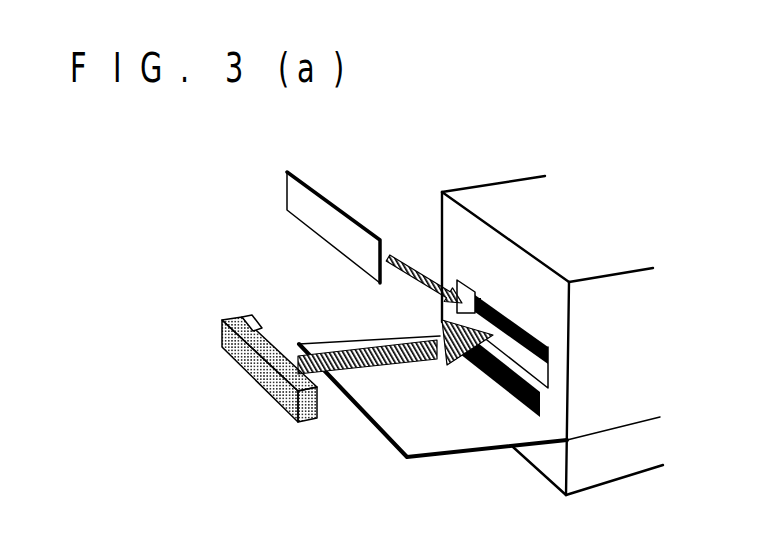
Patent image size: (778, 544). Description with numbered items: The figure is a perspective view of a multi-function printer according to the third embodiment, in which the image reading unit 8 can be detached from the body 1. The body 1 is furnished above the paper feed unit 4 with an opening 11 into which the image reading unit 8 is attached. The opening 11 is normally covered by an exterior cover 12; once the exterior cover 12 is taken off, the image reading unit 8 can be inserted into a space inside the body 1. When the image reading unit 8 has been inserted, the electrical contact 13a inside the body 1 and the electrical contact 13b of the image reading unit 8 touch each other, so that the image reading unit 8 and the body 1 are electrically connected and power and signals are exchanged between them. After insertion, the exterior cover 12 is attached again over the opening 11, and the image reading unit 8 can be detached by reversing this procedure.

The body 1 is at (522, 176).
The paper feed unit 4 is at (470, 433).
The image reading unit 8 is at (270, 402).
The opening 11 is at (515, 324).
The exterior cover 12 is at (313, 198).
The electrical contact 13a is at (476, 292).
The electrical contact 13b is at (258, 323).